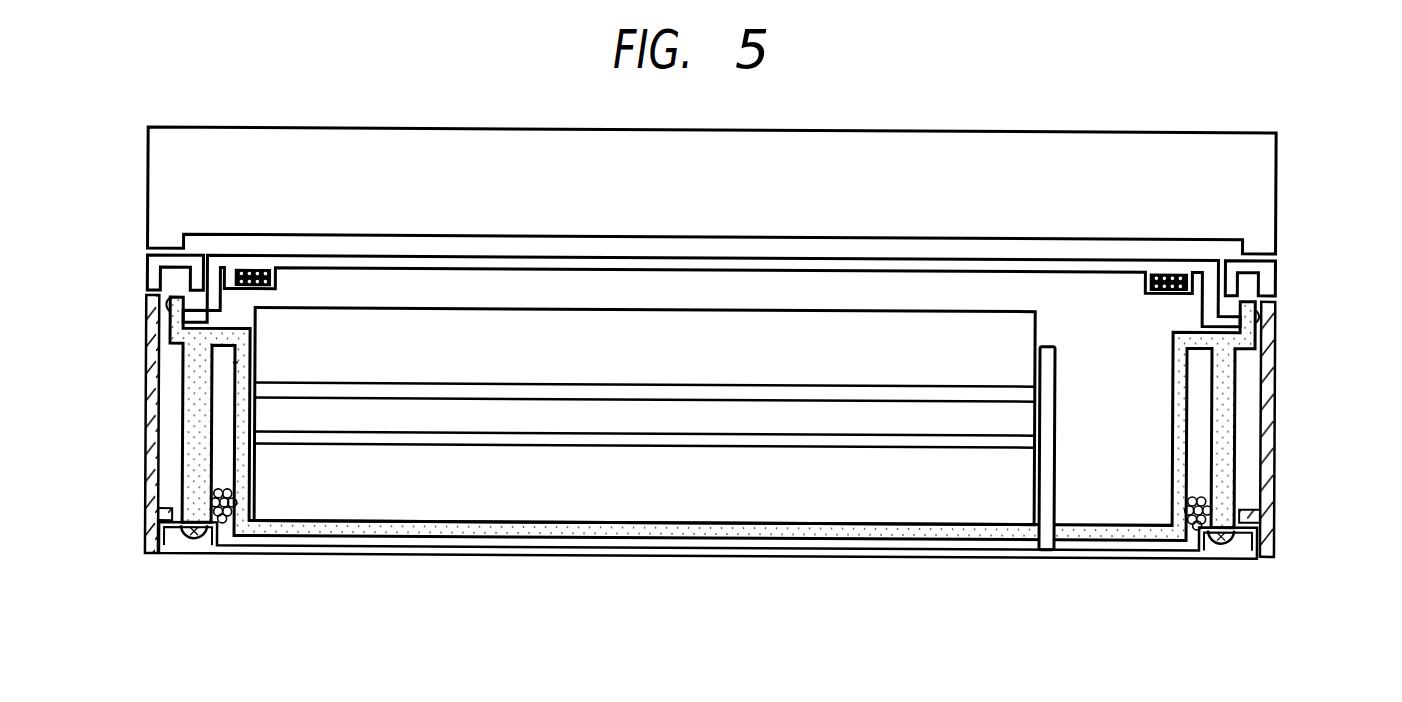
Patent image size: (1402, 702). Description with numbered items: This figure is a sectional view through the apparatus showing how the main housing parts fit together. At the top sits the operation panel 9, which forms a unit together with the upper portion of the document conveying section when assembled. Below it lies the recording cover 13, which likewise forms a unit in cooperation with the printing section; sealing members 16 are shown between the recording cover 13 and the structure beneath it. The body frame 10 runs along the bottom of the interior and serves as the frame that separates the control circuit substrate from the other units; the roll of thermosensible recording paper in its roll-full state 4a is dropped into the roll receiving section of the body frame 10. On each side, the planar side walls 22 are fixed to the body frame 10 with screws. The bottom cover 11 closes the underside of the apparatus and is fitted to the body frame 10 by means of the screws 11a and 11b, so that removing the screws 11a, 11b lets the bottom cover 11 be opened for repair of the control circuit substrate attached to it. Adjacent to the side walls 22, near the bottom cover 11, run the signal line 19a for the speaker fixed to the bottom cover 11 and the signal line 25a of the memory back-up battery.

The operation panel 9 is at (196, 130).
The recording cover 13 is at (628, 258).
The sealing member 16 is at (251, 269).
The side wall 22 is at (157, 422).
The body frame 10 is at (681, 520).
The roll-full state 4a is at (885, 507).
The bottom cover 11 is at (585, 553).
The screw 11a is at (197, 536).
The screw 11b is at (1225, 537).
The signal line for the speaker 19a is at (215, 497).
The signal line 25a is at (1205, 506).